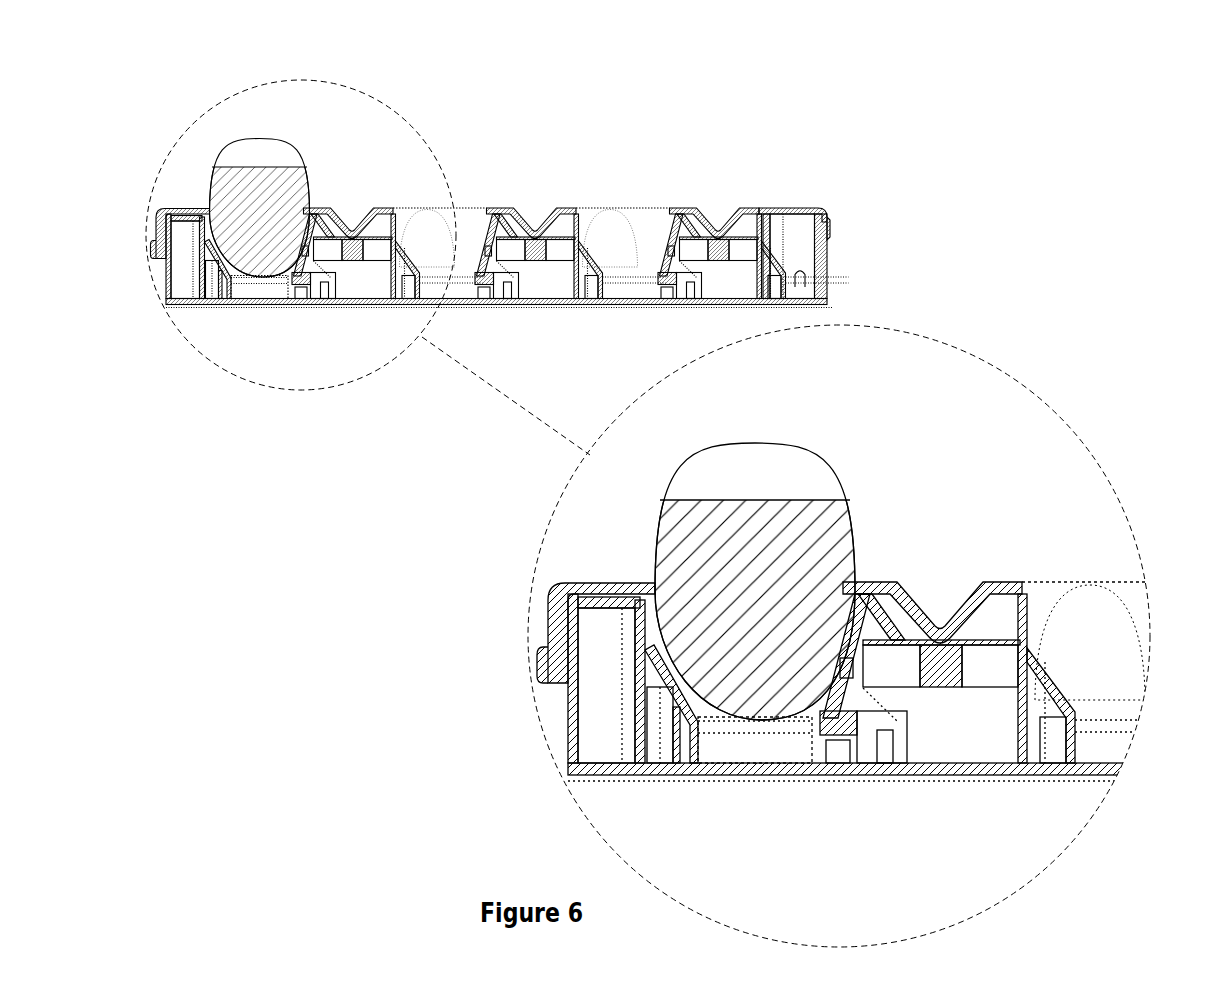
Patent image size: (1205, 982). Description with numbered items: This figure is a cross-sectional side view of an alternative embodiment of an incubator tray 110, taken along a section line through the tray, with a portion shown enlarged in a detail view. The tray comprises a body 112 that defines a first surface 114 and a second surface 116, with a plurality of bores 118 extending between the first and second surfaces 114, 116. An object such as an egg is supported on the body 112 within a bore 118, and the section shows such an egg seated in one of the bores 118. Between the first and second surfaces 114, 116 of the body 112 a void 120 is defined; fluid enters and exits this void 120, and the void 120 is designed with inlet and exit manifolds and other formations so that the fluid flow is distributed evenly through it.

The incubator tray 110 is at (650, 122).
The body 112 is at (827, 208).
The first surface 114 is at (777, 208).
The second surface 116 is at (757, 305).
The bore 118 is at (258, 292).
The void 120 is at (208, 286).